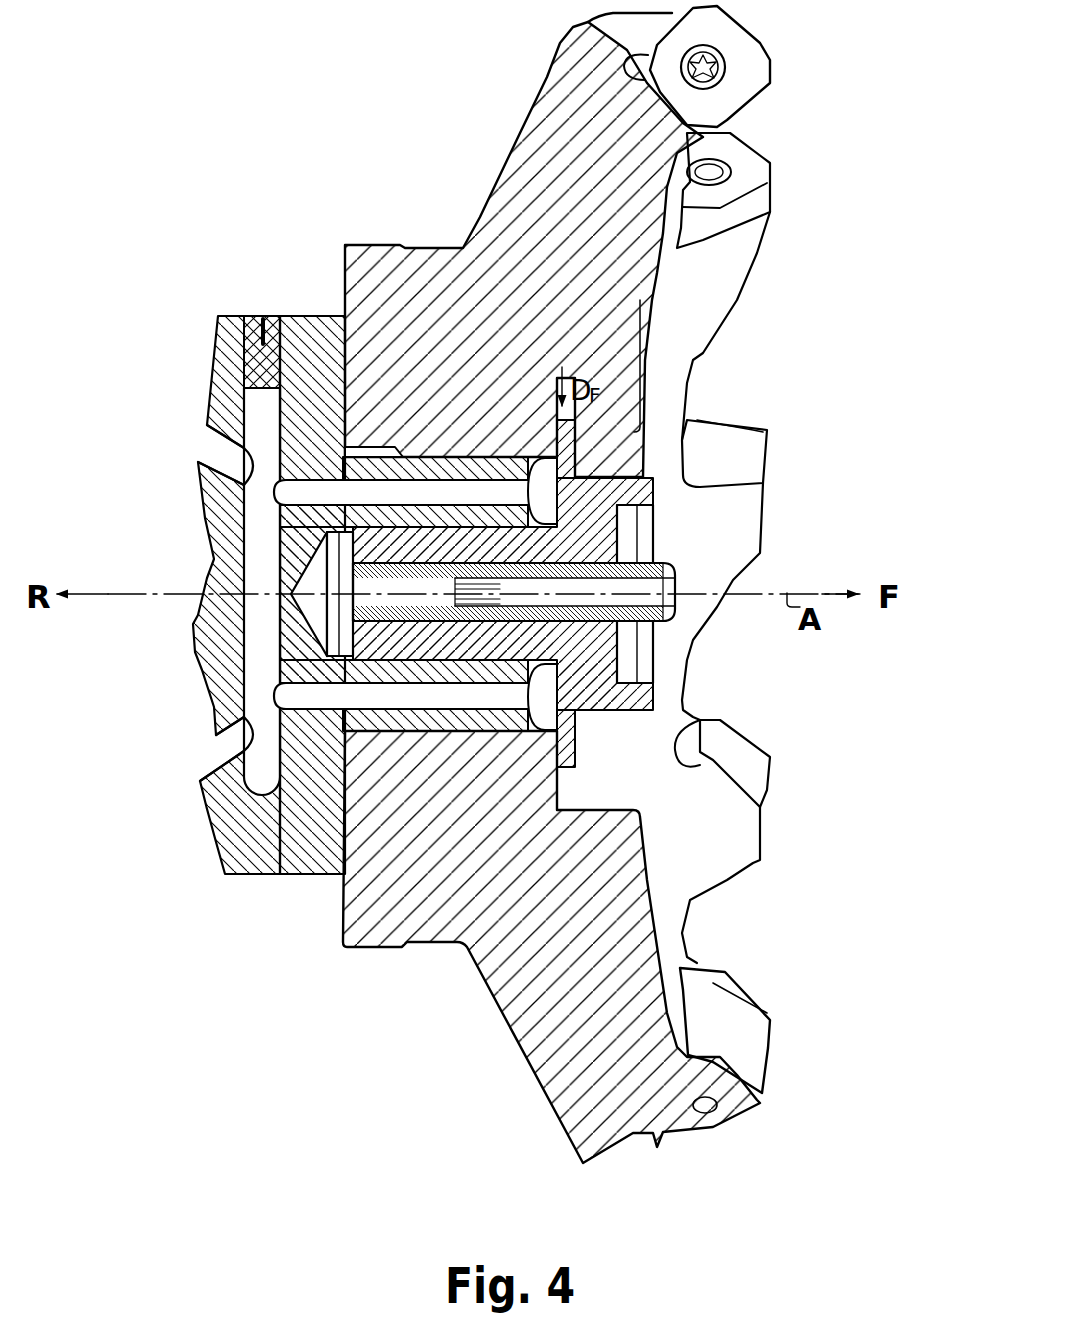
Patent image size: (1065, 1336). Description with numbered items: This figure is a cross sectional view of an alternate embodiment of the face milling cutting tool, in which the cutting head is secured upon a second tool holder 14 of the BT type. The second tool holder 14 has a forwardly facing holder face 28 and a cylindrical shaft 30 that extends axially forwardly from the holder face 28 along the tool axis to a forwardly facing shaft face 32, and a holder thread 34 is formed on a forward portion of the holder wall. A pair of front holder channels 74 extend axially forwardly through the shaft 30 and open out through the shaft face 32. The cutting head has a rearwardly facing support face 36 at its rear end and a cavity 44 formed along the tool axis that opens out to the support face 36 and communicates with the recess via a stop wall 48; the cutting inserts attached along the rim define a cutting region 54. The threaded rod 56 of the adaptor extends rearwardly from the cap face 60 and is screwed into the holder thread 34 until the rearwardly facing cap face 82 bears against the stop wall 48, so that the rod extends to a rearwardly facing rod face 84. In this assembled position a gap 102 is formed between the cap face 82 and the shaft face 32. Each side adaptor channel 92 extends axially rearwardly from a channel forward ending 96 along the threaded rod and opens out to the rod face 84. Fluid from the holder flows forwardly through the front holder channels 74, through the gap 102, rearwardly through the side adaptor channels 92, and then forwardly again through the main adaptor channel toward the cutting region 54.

The second tool holder 14 is at (245, 910).
The holder face 28 is at (378, 338).
The shaft 30 is at (473, 446).
The shaft face 32 is at (583, 495).
The holder thread 34 is at (330, 548).
The support face 36 is at (345, 898).
The cavity 44 is at (470, 600).
The stop wall 48 is at (697, 357).
The cutting region 54 is at (800, 137).
The threaded rod 56 is at (433, 498).
The cap face 60 is at (535, 440).
The front holder channels 74 is at (345, 485).
The cap face 82 is at (541, 682).
The rod face 84 is at (381, 536).
The side adaptor channels 92 is at (430, 652).
The channel forward ending 96 is at (575, 737).
The gap 102 is at (577, 418).